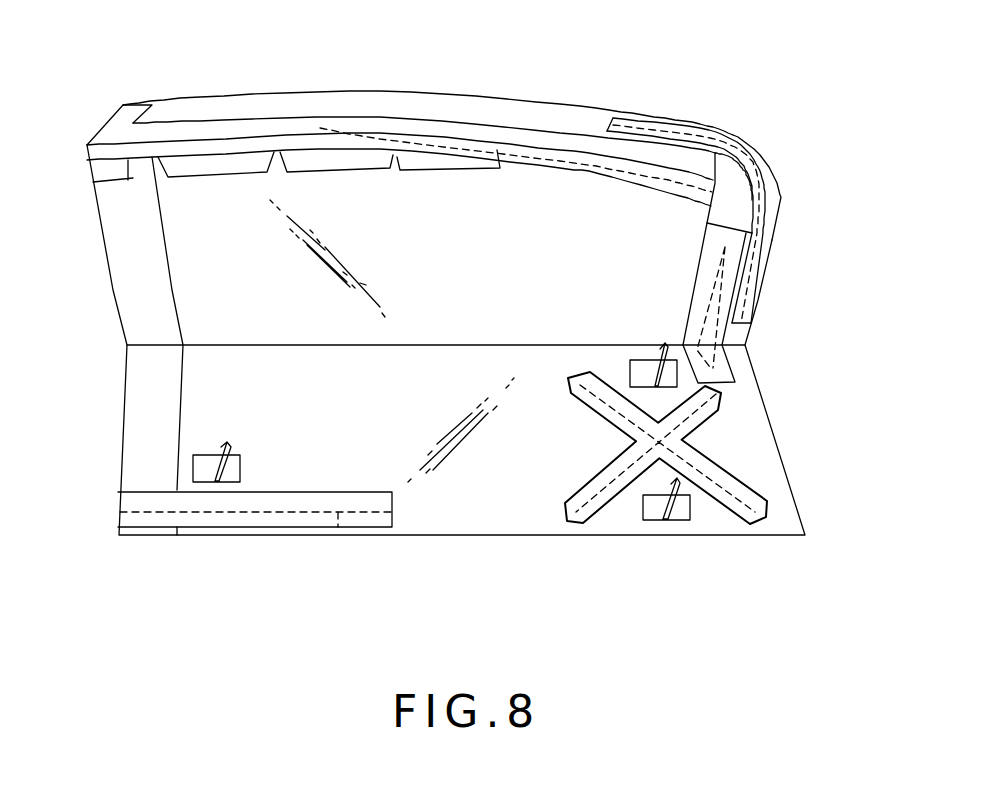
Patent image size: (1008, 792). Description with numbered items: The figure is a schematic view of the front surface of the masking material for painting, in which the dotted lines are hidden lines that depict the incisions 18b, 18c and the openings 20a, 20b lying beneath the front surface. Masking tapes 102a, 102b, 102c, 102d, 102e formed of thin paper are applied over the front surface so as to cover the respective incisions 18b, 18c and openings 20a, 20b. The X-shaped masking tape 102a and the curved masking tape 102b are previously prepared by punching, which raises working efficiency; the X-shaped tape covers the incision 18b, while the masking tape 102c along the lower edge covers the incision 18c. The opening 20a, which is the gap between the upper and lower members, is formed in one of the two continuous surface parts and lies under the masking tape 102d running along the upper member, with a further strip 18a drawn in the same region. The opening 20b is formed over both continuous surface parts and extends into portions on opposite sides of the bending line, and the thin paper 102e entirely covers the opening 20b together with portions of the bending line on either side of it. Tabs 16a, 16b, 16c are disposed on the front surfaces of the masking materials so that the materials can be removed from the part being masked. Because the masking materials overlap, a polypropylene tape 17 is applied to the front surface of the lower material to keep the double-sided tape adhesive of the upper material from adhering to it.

The polypropylene tape 17 is at (143, 425).
The masking tape 102d is at (216, 140).
The opening 20a is at (653, 178).
The top antenna element 18a is at (648, 118).
The curved masking tape 102b is at (753, 157).
The masking tape 102e is at (733, 256).
The opening 20b is at (735, 304).
The tab 16a is at (230, 440).
The tab 16b is at (657, 358).
The tab 16c is at (662, 521).
The X-shaped masking tape 102a is at (722, 467).
The incision 18b is at (745, 496).
The masking tape 102c is at (230, 528).
The incision 18c is at (340, 528).